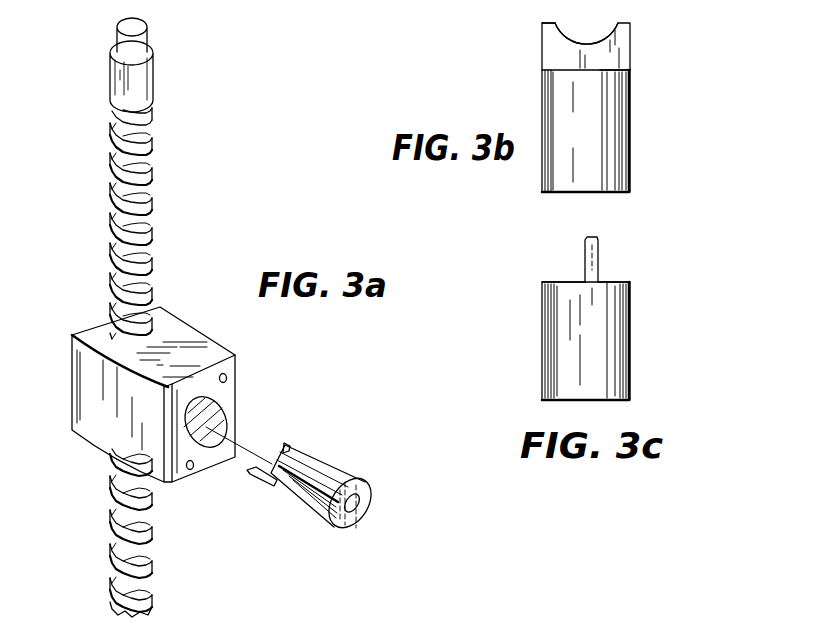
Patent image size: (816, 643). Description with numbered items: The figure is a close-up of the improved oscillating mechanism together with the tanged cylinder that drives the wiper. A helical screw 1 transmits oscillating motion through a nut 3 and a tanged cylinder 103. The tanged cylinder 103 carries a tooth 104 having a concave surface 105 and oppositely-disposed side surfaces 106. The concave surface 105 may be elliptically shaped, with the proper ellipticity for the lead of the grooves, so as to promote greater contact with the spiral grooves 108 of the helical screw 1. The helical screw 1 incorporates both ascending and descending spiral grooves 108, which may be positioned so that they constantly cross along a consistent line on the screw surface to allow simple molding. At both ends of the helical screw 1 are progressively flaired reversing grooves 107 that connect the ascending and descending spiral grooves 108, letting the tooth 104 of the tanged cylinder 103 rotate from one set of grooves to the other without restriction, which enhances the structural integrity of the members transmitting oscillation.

In FIG. 3A, the helical screw 1 is at (160, 215).
In FIG. 3A, the nut 3 is at (71, 366).
In FIG. 3A, the tanged cylinder 103 is at (352, 472).
In FIG. 3B, the tanged cylinder 103 is at (637, 132).
In FIG. 3C, the tanged cylinder 103 is at (630, 357).
In FIG. 3A, the tooth 104 is at (262, 478).
In FIG. 3B, the tooth 104 is at (542, 30).
In FIG. 3C, the tooth 104 is at (598, 238).
In FIG. 3A, the concave surface 105 is at (284, 443).
In FIG. 3B, the concave surface 105 is at (580, 45).
In FIG. 3B, the side surfaces 106 is at (622, 52).
In FIG. 3C, the side surfaces 106 is at (598, 262).
In FIG. 3A, the reversing grooves 107 is at (150, 108).
In FIG. 3A, the spiral grooves 108 is at (113, 272).